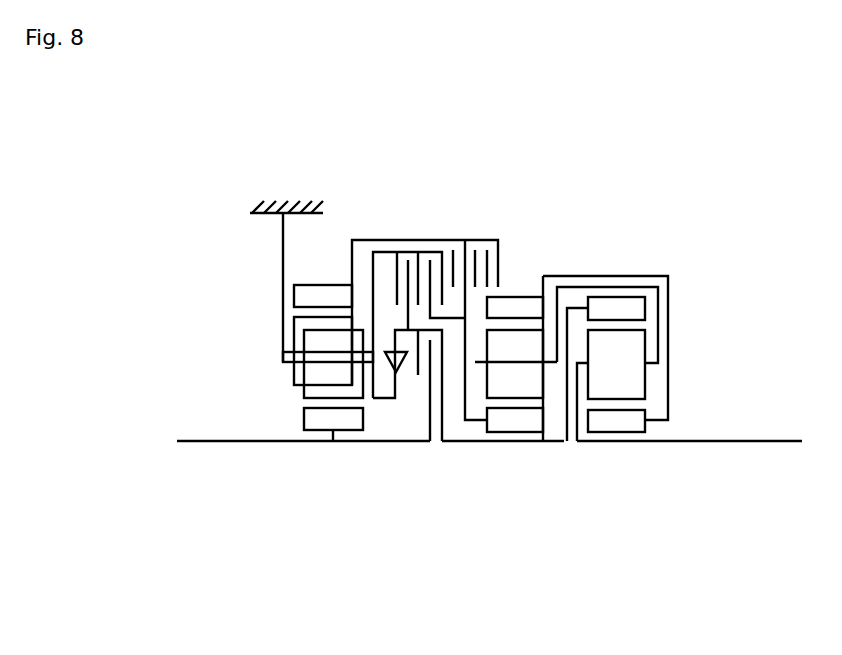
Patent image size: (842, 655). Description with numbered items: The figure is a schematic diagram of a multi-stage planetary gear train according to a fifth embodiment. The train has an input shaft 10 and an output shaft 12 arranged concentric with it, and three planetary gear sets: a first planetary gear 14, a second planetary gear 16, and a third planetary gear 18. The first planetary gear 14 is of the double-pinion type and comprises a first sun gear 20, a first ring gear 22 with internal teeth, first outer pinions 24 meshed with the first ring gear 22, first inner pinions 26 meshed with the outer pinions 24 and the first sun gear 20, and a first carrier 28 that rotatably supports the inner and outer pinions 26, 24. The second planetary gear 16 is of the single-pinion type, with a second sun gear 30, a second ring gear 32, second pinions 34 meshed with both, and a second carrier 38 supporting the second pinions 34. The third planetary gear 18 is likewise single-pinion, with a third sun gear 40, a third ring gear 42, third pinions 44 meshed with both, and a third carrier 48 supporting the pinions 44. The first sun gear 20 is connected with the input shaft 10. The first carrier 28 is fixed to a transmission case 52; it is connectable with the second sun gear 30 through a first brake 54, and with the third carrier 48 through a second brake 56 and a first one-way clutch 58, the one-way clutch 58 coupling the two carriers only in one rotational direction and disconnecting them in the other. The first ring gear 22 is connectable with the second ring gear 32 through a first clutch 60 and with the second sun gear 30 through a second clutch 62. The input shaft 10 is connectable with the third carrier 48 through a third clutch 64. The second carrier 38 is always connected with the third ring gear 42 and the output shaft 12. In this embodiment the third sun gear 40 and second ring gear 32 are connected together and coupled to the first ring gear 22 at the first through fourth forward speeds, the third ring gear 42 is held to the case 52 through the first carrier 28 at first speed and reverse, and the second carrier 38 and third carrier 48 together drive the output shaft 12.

The input shaft 10 is at (215, 441).
The output shaft 12 is at (738, 441).
The first planetary gear 14 is at (292, 450).
The second planetary gear 16 is at (525, 452).
The third planetary gear 18 is at (623, 450).
The first sun gear 20 is at (327, 420).
The first ring gear 22 is at (315, 297).
The first outer pinions 24 is at (300, 337).
The first inner pinions 26 is at (313, 390).
The first carrier 28 is at (283, 358).
The second sun gear 30 is at (508, 422).
The second ring gear 32 is at (512, 302).
The second pinions 34 is at (538, 343).
The second carrier 38 is at (552, 363).
The third sun gear 40 is at (606, 418).
The third ring gear 42 is at (607, 307).
The third pinions 44 is at (638, 345).
The third carrier 48 is at (650, 363).
The transmission case 52 is at (273, 203).
The first brake 54 is at (427, 262).
The second brake 56 is at (405, 260).
The first one-way clutch 58 is at (402, 365).
The first clutch 60 is at (492, 250).
The second clutch 62 is at (467, 250).
The third clutch 64 is at (436, 348).